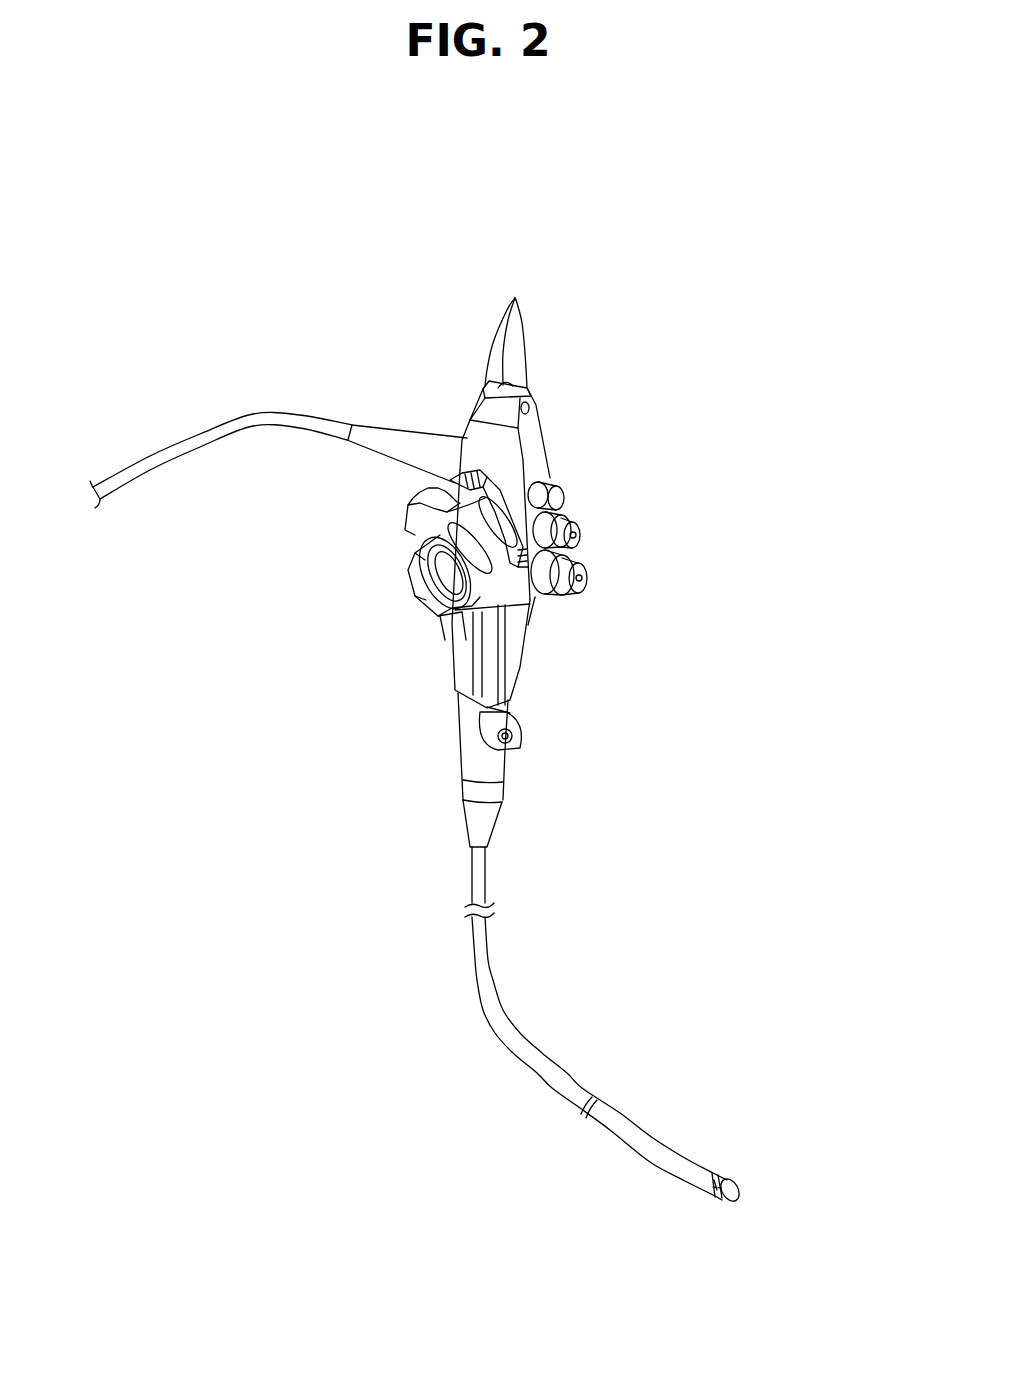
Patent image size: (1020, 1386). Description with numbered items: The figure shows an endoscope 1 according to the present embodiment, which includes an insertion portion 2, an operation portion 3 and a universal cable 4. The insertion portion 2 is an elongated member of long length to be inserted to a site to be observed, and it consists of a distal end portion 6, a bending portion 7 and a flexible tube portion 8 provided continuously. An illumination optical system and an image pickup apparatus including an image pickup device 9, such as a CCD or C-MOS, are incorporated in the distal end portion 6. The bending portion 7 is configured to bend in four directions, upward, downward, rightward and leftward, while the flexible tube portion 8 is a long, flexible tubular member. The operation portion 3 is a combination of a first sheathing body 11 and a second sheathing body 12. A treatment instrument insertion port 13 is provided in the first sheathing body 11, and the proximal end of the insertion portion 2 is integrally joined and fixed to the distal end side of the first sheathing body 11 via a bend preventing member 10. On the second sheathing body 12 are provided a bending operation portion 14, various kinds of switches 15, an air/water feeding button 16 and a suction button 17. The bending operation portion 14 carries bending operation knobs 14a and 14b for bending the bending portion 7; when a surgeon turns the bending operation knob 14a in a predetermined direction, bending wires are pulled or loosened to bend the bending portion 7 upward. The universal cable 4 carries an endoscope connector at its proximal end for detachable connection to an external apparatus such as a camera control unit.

The endoscope 1 is at (343, 321).
The insertion portion 2 is at (448, 1180).
The operation portion 3 is at (757, 378).
The universal cable 4 is at (138, 457).
The distal end portion 6 is at (717, 1198).
The bending portion 7 is at (603, 1127).
The flexible tube portion 8 is at (502, 1032).
The image pickup device 9 is at (725, 1172).
The bend preventing member 10 is at (483, 813).
The first sheathing body 11 is at (517, 620).
The second sheathing body 12 is at (507, 493).
The treatment instrument insertion port 13 is at (517, 718).
The bending operation portion 14 is at (283, 490).
The bending operation knob 14a is at (412, 505).
The bending operation knob 14b is at (412, 543).
The switches 15 is at (558, 487).
The air/water feeding button 16 is at (570, 589).
The suction button 17 is at (571, 519).